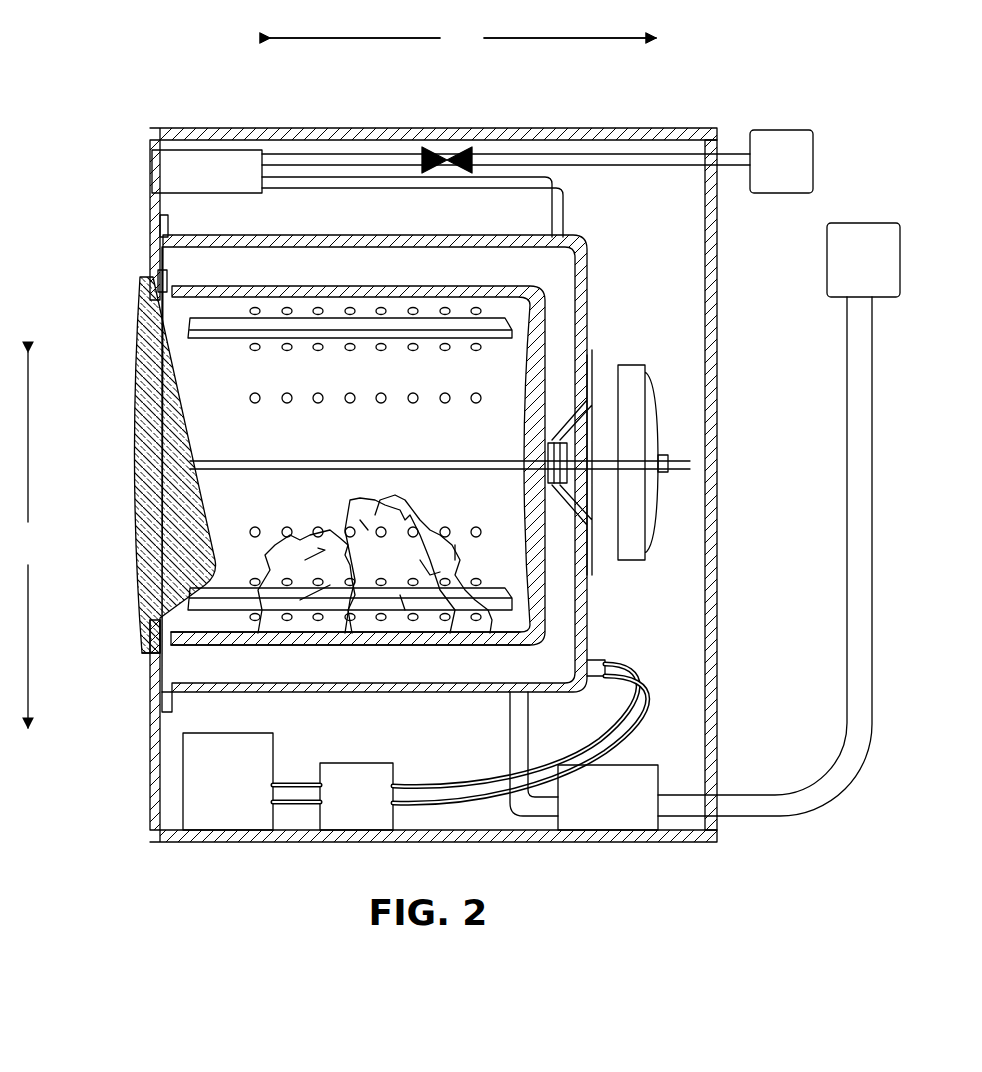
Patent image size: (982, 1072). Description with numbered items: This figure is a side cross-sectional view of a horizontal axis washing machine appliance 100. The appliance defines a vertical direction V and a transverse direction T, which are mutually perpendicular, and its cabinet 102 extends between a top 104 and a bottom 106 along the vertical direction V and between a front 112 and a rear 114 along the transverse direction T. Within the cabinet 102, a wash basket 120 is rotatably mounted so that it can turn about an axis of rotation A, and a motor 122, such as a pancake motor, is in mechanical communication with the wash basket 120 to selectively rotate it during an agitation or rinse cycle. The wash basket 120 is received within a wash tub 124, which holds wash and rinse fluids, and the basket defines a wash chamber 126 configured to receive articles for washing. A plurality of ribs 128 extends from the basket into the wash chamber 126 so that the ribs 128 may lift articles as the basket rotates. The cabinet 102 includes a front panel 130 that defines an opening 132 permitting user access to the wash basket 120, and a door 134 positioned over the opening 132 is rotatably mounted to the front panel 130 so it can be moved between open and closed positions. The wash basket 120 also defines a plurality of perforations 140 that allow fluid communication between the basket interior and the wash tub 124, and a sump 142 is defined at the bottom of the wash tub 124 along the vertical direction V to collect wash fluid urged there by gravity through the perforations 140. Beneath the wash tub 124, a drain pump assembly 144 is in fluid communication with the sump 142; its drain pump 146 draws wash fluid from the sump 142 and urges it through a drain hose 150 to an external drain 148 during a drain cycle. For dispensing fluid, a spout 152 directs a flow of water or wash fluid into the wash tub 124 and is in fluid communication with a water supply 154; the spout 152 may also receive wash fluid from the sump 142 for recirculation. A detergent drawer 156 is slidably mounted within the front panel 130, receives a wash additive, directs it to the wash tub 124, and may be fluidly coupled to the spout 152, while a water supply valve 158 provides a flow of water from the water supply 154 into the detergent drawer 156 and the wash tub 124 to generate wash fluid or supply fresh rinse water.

The washing machine appliance 100 is at (180, 58).
The cabinet 102 is at (712, 472).
The top 104 is at (726, 124).
The bottom 106 is at (738, 838).
The front 112 is at (143, 128).
The rear 114 is at (722, 290).
The wash basket 120 is at (352, 288).
The motor 122 is at (632, 398).
The wash tub 124 is at (583, 310).
The wash chamber 126 is at (218, 418).
The ribs 128 is at (273, 463).
The front panel 130 is at (152, 658).
The opening 132 is at (185, 322).
The door 134 is at (150, 520).
The perforations 140 is at (416, 400).
The sump 142 is at (550, 656).
The drain pump assembly 144 is at (680, 719).
The drain pump 146 is at (588, 815).
The external drain 148 is at (842, 272).
The drain hose 150 is at (846, 598).
The spout 152 is at (563, 210).
The water supply 154 is at (762, 172).
The detergent drawer 156 is at (255, 172).
The water supply valve 158 is at (448, 148).
The axis of rotation A is at (688, 462).
The transverse direction T is at (463, 40).
The vertical direction V is at (28, 540).